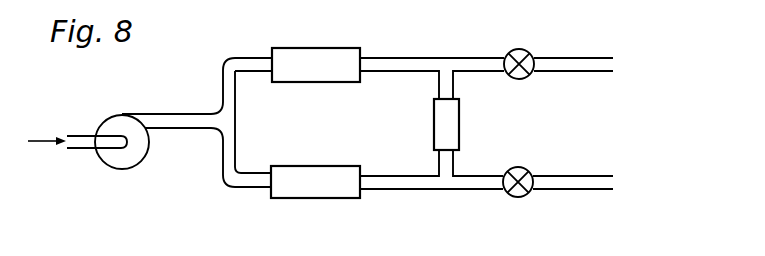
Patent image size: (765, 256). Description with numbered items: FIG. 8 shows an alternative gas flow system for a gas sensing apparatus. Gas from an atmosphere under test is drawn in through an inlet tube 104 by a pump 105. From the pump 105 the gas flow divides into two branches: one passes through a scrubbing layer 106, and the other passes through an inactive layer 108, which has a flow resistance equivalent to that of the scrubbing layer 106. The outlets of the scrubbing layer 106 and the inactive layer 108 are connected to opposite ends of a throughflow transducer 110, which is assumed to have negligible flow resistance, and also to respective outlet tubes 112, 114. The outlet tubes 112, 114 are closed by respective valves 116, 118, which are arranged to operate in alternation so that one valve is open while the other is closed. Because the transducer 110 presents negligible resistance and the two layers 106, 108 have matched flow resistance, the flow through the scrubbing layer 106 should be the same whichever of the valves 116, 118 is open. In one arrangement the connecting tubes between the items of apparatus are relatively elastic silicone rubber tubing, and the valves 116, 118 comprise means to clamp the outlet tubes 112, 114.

The inlet tube 104 is at (77, 142).
The pump 105 is at (121, 169).
The scrubbing layer 106 is at (305, 83).
The inactive layer 108 is at (347, 164).
The throughflow transducer 110 is at (455, 124).
The outlet tube 112 is at (607, 62).
The outlet tube 114 is at (610, 176).
The valve 116 is at (527, 49).
The valve 118 is at (525, 167).